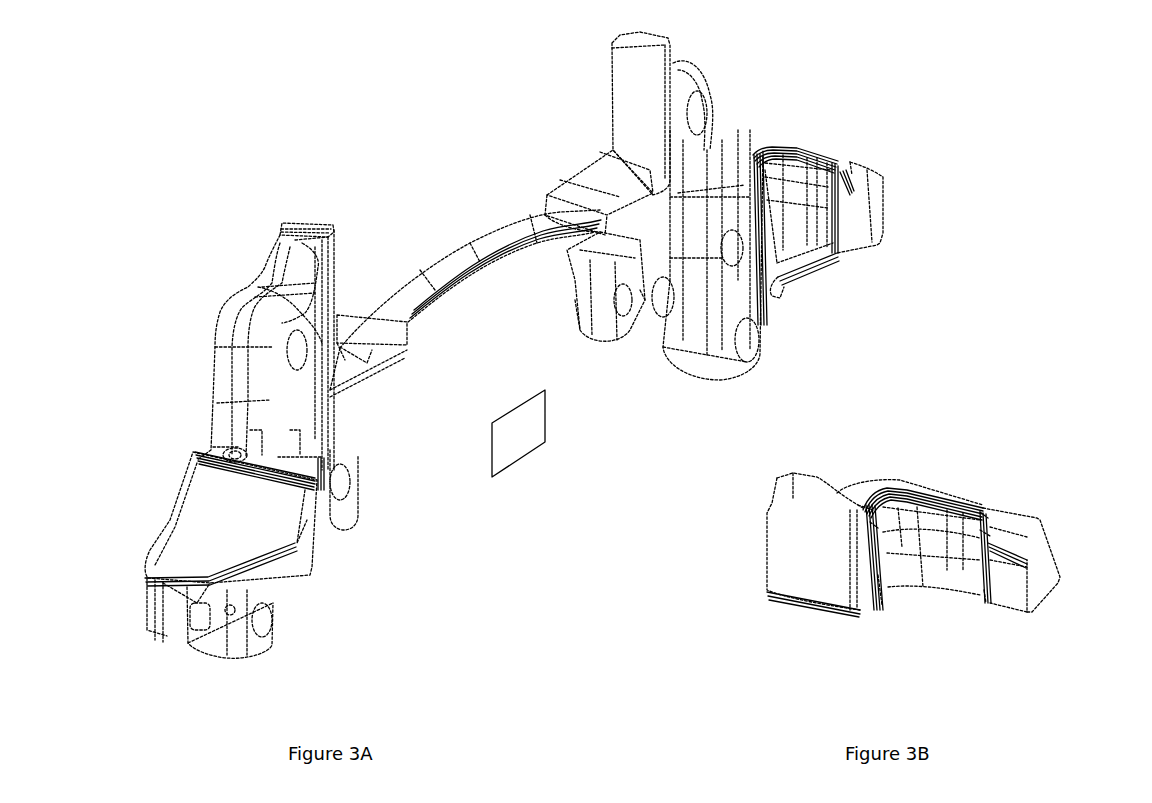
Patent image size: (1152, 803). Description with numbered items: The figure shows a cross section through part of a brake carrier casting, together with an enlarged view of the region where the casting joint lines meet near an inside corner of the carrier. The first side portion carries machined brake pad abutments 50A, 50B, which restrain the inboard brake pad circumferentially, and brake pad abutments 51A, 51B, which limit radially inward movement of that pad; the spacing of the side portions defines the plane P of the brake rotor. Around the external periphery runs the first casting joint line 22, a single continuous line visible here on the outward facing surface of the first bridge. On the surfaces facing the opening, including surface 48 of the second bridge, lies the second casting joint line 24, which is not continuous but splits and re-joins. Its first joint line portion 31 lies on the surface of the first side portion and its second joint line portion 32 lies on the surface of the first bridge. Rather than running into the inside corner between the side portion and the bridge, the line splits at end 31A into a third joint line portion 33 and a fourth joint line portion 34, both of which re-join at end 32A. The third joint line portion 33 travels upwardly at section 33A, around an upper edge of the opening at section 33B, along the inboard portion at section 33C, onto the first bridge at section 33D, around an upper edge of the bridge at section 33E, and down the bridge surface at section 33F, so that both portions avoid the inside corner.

In FIG. 3A, the first casting joint line 22 is at (886, 207).
In FIG. 3A, the second casting joint line 24 is at (455, 285).
In FIG. 3A, the first joint line portion 31 is at (742, 190).
In FIG. 3B, the first joint line portion 31 is at (878, 547).
In FIG. 3A, the end of the first joint line portion 31A is at (757, 155).
In FIG. 3B, the end of the first joint line portion 31A is at (880, 548).
In FIG. 3A, the second joint line portion 32 is at (847, 190).
In FIG. 3B, the second joint line portion 32 is at (1017, 560).
In FIG. 3A, the end of the second joint line portion 32A is at (837, 188).
In FIG. 3B, the end of the second joint line portion 32A is at (987, 547).
In FIG. 3A, the third joint line portion 33 is at (798, 147).
In FIG. 3B, the section of the third joint line portion 33A is at (878, 528).
In FIG. 3B, the section of the third joint line portion 33B is at (873, 510).
In FIG. 3B, the section of the third joint line portion 33C is at (887, 497).
In FIG. 3B, the section of the third joint line portion 33D is at (947, 497).
In FIG. 3B, the section of the third joint line portion 33E is at (987, 517).
In FIG. 3B, the section of the third joint line portion 33F is at (987, 535).
In FIG. 3A, the fourth joint line portion 34 is at (805, 265).
In FIG. 3B, the fourth joint line portion 34 is at (882, 577).
In FIG. 3A, the surface of the second bridge 48 is at (318, 551).
In FIG. 3A, the brake pad abutment 50A is at (643, 107).
In FIG. 3A, the brake pad abutment 50B is at (320, 224).
In FIG. 3A, the brake pad abutment 51A is at (594, 197).
In FIG. 3A, the brake pad abutment 51B is at (355, 325).
In FIG. 3A, the plane of the brake rotor P is at (528, 438).